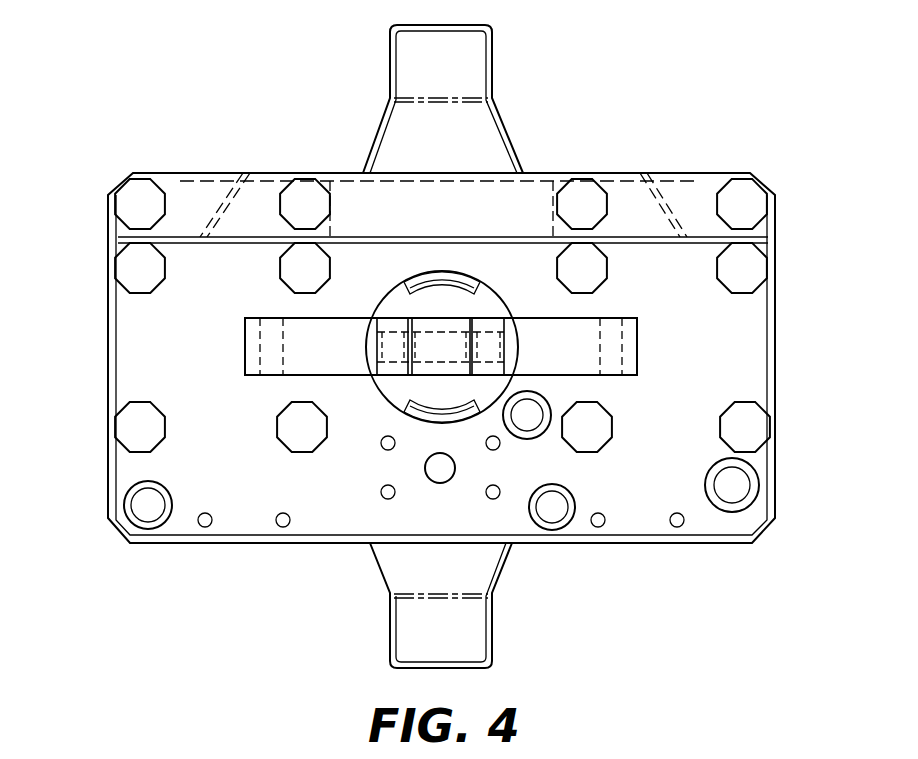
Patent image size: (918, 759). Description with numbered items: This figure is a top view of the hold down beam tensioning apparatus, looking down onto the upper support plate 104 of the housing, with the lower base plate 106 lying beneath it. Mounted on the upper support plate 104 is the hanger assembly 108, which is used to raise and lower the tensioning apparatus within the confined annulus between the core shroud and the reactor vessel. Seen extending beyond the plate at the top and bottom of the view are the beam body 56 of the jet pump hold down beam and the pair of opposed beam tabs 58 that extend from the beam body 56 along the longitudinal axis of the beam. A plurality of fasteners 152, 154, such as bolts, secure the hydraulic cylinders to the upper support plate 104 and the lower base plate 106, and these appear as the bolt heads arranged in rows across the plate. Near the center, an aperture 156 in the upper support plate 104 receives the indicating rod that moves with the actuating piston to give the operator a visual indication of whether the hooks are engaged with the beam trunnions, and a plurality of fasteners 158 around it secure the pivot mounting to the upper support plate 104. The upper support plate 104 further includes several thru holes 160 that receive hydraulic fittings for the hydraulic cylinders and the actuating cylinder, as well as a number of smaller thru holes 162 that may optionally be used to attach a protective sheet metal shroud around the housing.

The beam tabs 58 is at (470, 60).
The beam body 56 is at (480, 140).
The upper support plate 104 is at (748, 350).
The lower base plate 106 is at (683, 190).
The hanger assembly 108 is at (298, 338).
The fasteners 152 is at (137, 425).
The fasteners 154 is at (148, 196).
The aperture 156 is at (443, 472).
The fasteners 158 is at (388, 494).
The thru holes 160 is at (145, 505).
The smaller thru holes 162 is at (205, 527).